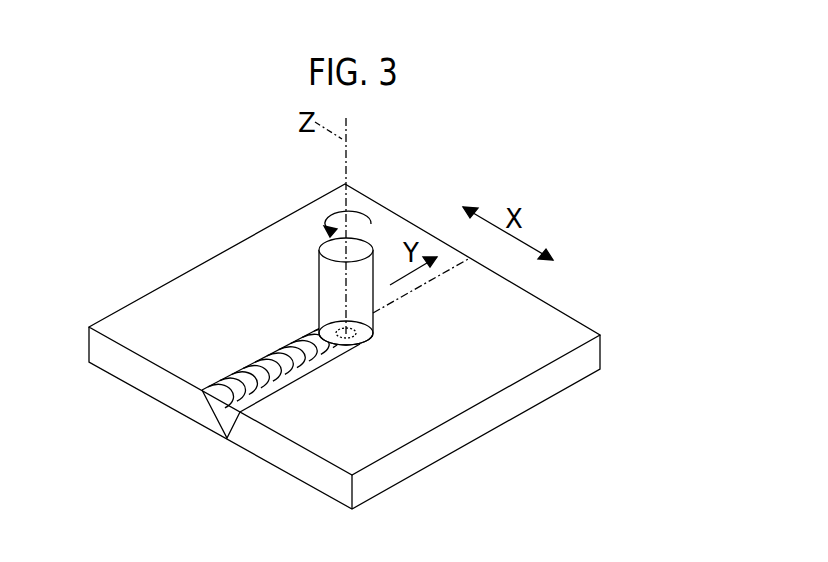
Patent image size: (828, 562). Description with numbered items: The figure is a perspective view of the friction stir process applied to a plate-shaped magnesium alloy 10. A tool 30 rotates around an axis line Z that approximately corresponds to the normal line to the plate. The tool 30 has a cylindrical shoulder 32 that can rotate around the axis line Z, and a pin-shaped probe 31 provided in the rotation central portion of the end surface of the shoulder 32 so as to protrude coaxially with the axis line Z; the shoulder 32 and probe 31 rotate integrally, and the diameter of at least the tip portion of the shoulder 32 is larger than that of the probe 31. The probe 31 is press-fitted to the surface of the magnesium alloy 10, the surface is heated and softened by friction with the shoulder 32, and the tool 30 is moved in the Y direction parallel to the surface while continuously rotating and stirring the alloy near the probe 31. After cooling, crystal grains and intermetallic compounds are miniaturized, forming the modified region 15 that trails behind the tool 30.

The magnesium alloy 10 is at (567, 324).
The modified region 15 is at (213, 413).
The tool 30 is at (390, 356).
The probe 31 is at (356, 335).
The shoulder 32 is at (370, 337).